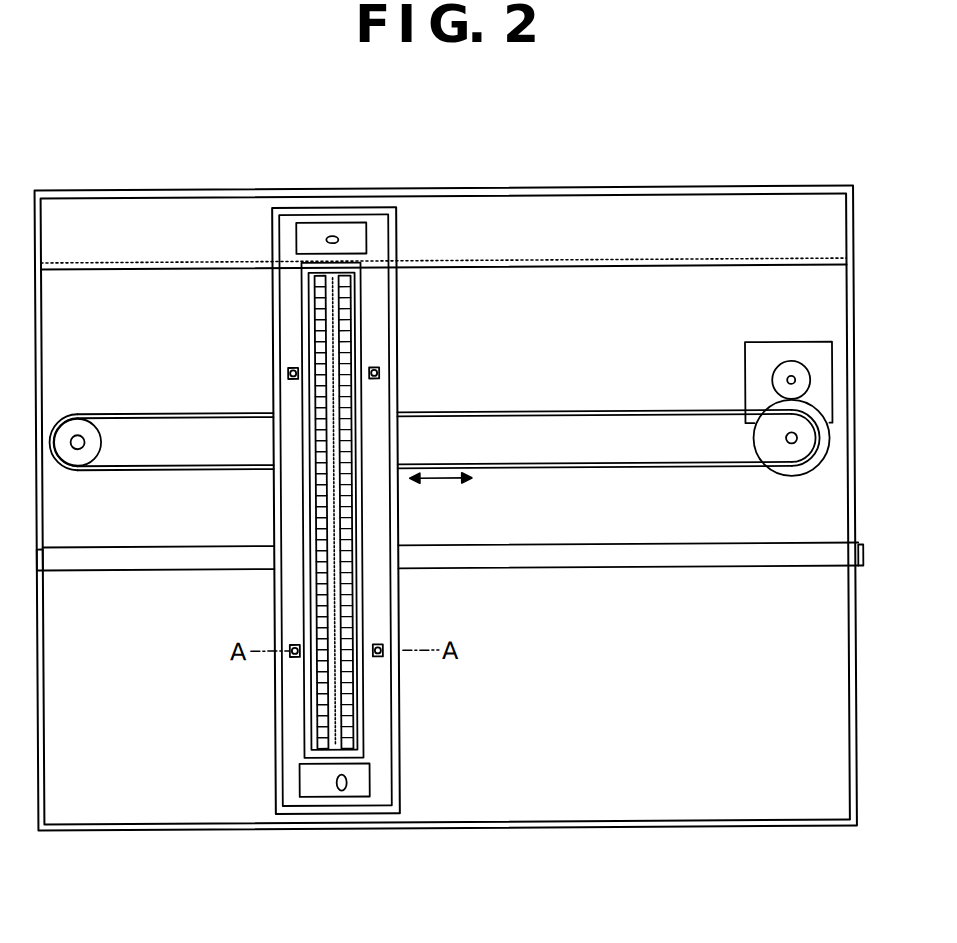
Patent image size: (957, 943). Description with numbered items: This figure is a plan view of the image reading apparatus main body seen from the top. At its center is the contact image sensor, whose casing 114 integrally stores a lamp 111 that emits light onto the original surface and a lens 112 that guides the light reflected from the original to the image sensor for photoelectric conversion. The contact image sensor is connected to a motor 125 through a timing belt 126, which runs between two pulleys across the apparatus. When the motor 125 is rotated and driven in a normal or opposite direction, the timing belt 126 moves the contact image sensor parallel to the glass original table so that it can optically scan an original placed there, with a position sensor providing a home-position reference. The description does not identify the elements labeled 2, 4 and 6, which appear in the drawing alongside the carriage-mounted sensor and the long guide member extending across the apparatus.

The sensor 2 is at (291, 366).
The carriage 4 is at (295, 813).
The guide shaft 6 is at (773, 560).
The lamp 111 is at (318, 302).
The lens 112 is at (331, 236).
The casing 114 is at (352, 794).
The motor 125 is at (820, 370).
The timing belt 126 is at (728, 468).